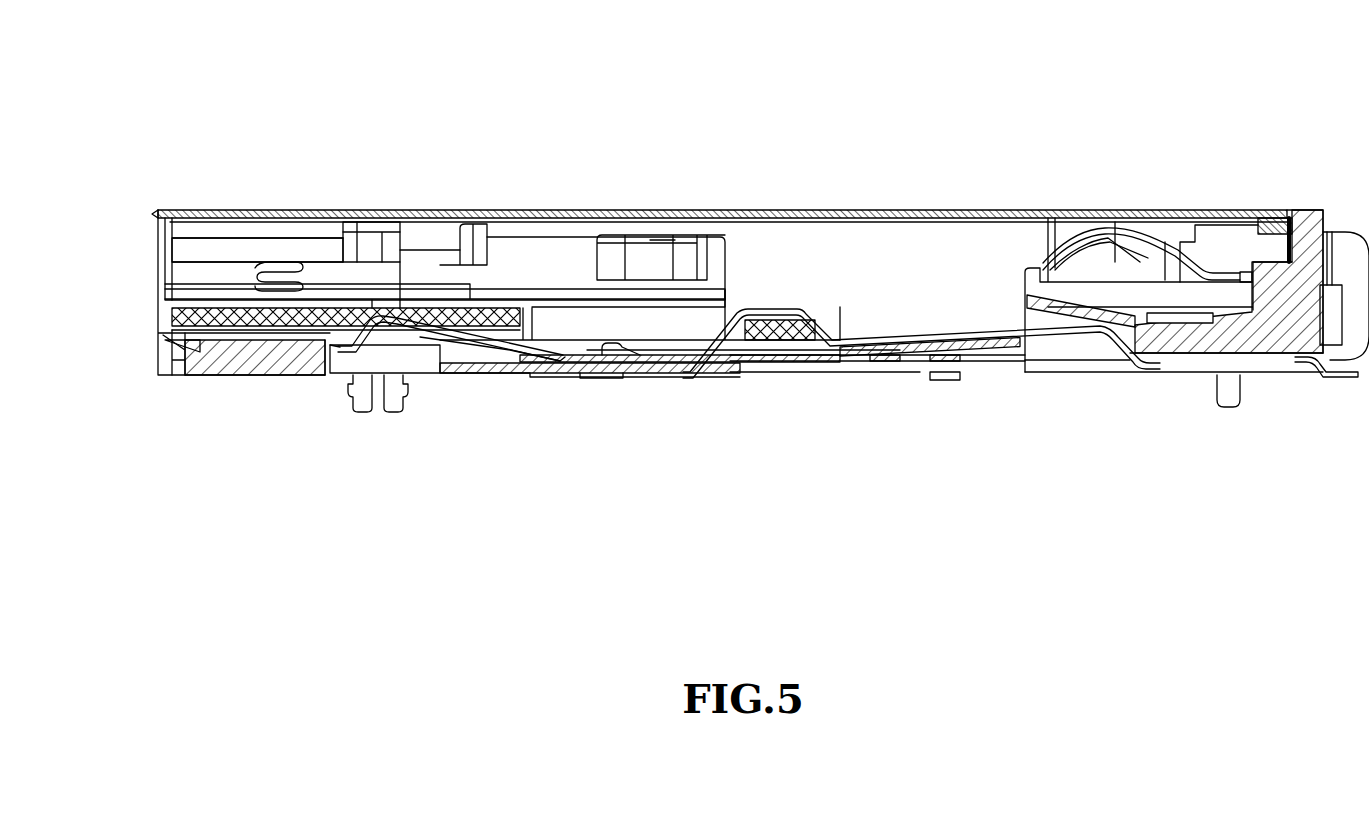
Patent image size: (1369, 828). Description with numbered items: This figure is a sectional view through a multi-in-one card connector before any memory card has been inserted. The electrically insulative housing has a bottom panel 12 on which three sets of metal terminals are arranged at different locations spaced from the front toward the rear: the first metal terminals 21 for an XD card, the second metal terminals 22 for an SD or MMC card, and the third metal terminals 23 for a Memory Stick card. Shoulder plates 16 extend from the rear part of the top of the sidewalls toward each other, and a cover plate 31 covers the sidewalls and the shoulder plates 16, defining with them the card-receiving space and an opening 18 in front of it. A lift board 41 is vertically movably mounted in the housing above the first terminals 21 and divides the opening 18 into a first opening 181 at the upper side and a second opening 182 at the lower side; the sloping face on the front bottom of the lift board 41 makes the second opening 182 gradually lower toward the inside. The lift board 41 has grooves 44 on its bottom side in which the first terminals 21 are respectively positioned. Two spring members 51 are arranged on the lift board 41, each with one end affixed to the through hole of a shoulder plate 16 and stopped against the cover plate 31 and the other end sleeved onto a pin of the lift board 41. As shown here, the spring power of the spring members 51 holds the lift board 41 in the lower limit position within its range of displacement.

The bottom panel 12 is at (250, 377).
The shoulder plates 16 is at (238, 226).
The opening 18 is at (457, 292).
The first opening 181 is at (175, 278).
The second opening 182 is at (127, 351).
The first metal terminals 21 is at (415, 330).
The second metal terminals 22 is at (748, 332).
The third metal terminals 23 is at (1122, 250).
The cover plate 31 is at (925, 210).
The lift board 41 is at (205, 332).
The grooves 44 is at (383, 313).
The spring members 51 is at (273, 280).